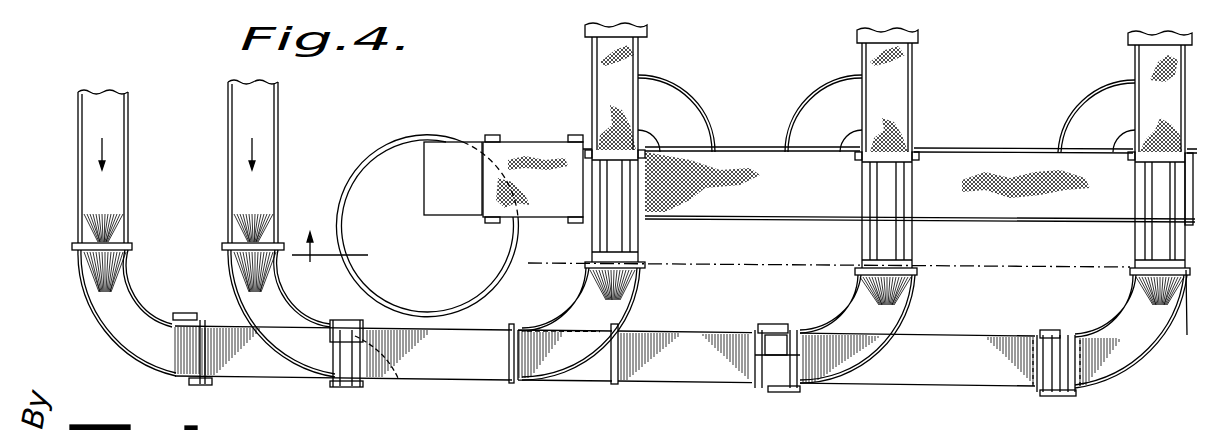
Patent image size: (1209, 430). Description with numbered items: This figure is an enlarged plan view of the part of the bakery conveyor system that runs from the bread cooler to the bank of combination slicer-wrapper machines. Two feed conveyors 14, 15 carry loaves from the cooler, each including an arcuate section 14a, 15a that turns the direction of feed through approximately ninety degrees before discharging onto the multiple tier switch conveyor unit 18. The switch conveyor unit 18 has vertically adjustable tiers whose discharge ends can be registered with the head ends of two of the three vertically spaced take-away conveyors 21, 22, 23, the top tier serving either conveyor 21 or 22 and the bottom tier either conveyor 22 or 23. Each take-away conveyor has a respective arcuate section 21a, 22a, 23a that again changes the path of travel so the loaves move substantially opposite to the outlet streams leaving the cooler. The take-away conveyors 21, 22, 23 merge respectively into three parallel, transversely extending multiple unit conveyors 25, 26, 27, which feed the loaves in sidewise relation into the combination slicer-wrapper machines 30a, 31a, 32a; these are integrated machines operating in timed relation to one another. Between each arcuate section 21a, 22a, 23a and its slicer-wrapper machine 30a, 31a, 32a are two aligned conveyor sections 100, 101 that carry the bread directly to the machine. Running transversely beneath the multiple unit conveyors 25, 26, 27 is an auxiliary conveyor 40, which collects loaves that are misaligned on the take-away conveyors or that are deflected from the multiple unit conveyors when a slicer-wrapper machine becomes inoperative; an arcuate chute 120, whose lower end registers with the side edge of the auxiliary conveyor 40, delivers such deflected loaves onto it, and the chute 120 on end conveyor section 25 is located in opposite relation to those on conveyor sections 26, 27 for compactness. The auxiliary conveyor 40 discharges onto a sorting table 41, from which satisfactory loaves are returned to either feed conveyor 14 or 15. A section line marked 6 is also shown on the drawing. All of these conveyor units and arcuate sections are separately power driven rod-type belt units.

The feed conveyor 14 is at (131, 213).
The feed conveyor 15 is at (281, 180).
The arcuate section 14a is at (133, 308).
The arcuate section 15a is at (341, 297).
The section line 6 is at (739, 283).
The multiple tier switch conveyor unit 18 is at (430, 382).
The take-away conveyor 21 is at (681, 343).
The arcuate section 21a is at (689, 279).
The take-away conveyor 22 is at (742, 378).
The arcuate section 22a is at (947, 294).
The take-away conveyor 23 is at (1002, 372).
The arcuate section 23a is at (1135, 342).
The multiple unit conveyor 25 is at (586, 73).
The multiple unit conveyor 26 is at (858, 63).
The multiple unit conveyor 27 is at (1130, 64).
The combination slicer-wrapper machine 30a is at (693, 49).
The combination slicer-wrapper machine 31a is at (957, 54).
The combination slicer-wrapper machine 32a is at (1130, 38).
The auxiliary conveyor 40 is at (768, 192).
The sorting table 41 is at (382, 163).
The conveyor section 100 is at (598, 236).
The conveyor section 101 is at (605, 95).
The arcuate chute 120 is at (705, 138).